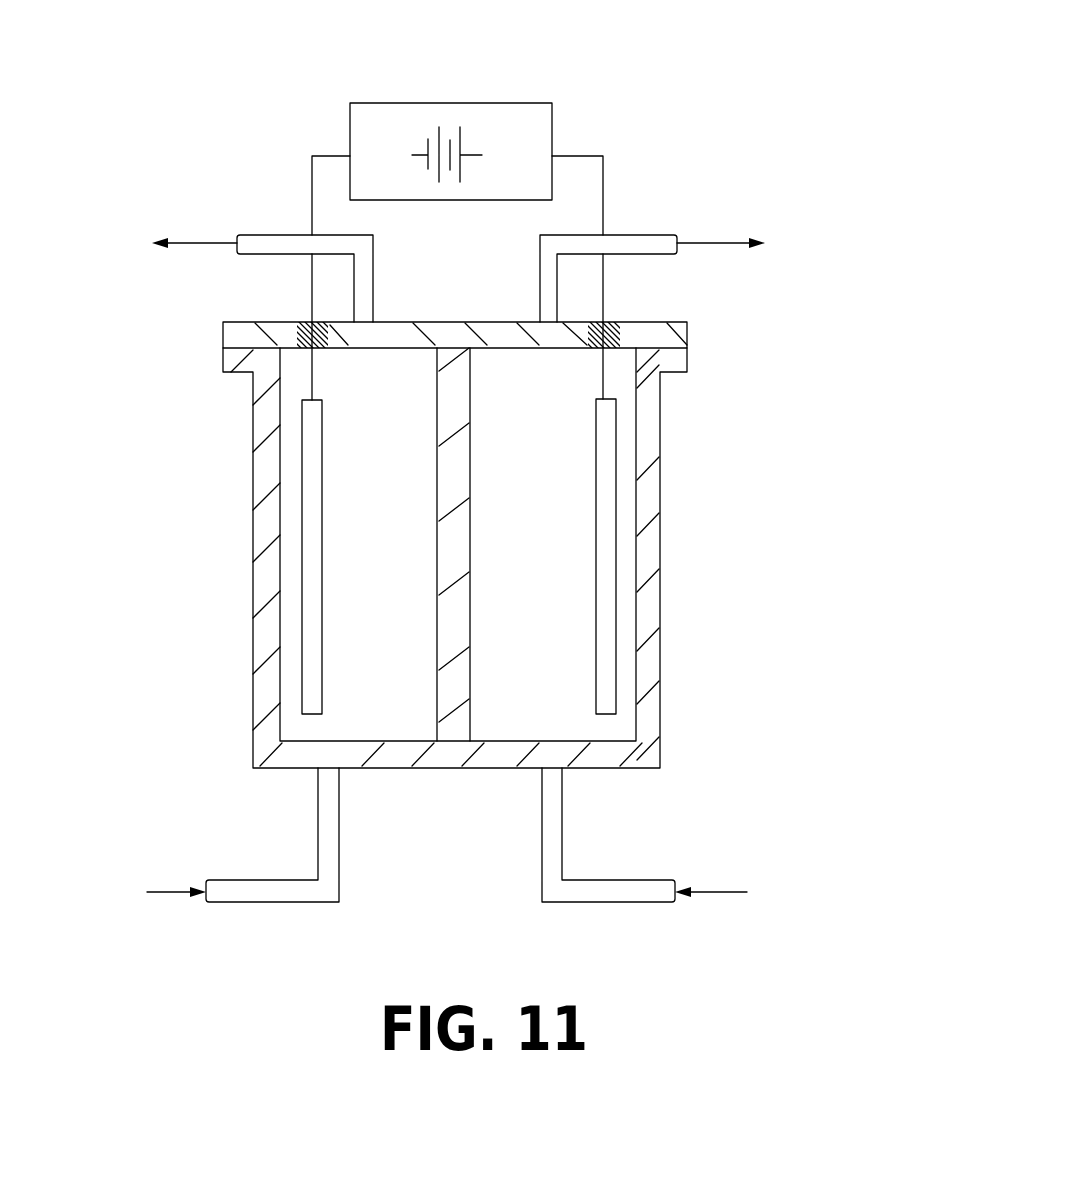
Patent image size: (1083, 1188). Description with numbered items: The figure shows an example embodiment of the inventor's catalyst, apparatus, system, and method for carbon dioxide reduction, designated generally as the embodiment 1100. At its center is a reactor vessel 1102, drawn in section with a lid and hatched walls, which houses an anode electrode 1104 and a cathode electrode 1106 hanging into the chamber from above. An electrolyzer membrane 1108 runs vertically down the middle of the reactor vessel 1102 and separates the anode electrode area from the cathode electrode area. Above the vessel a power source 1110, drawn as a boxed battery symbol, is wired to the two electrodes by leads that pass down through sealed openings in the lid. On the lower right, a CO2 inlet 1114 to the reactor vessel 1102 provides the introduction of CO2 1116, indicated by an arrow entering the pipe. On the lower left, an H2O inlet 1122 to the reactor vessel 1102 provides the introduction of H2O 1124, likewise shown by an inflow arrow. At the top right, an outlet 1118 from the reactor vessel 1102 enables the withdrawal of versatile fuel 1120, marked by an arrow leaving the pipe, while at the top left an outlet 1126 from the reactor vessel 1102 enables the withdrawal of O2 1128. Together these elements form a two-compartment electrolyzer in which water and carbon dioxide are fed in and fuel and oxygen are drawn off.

The catalyst, apparatus, system, and method for carbon dioxide reduction 1100 is at (642, 50).
The reactor vessel 1102 is at (510, 545).
The anode electrode 1104 is at (557, 484).
The cathode electrode 1106 is at (360, 484).
The membrane 1108 is at (412, 544).
The power source 1110 is at (507, 155).
The CO2 inlet 1114 is at (608, 876).
The CO2 1116 is at (751, 922).
The outlet 1118 is at (554, 278).
The versatile fuel 1120 is at (777, 229).
The H2O inlet 1122 is at (284, 869).
The H2O 1124 is at (139, 920).
The outlet 1126 is at (365, 276).
The O2 1128 is at (158, 196).